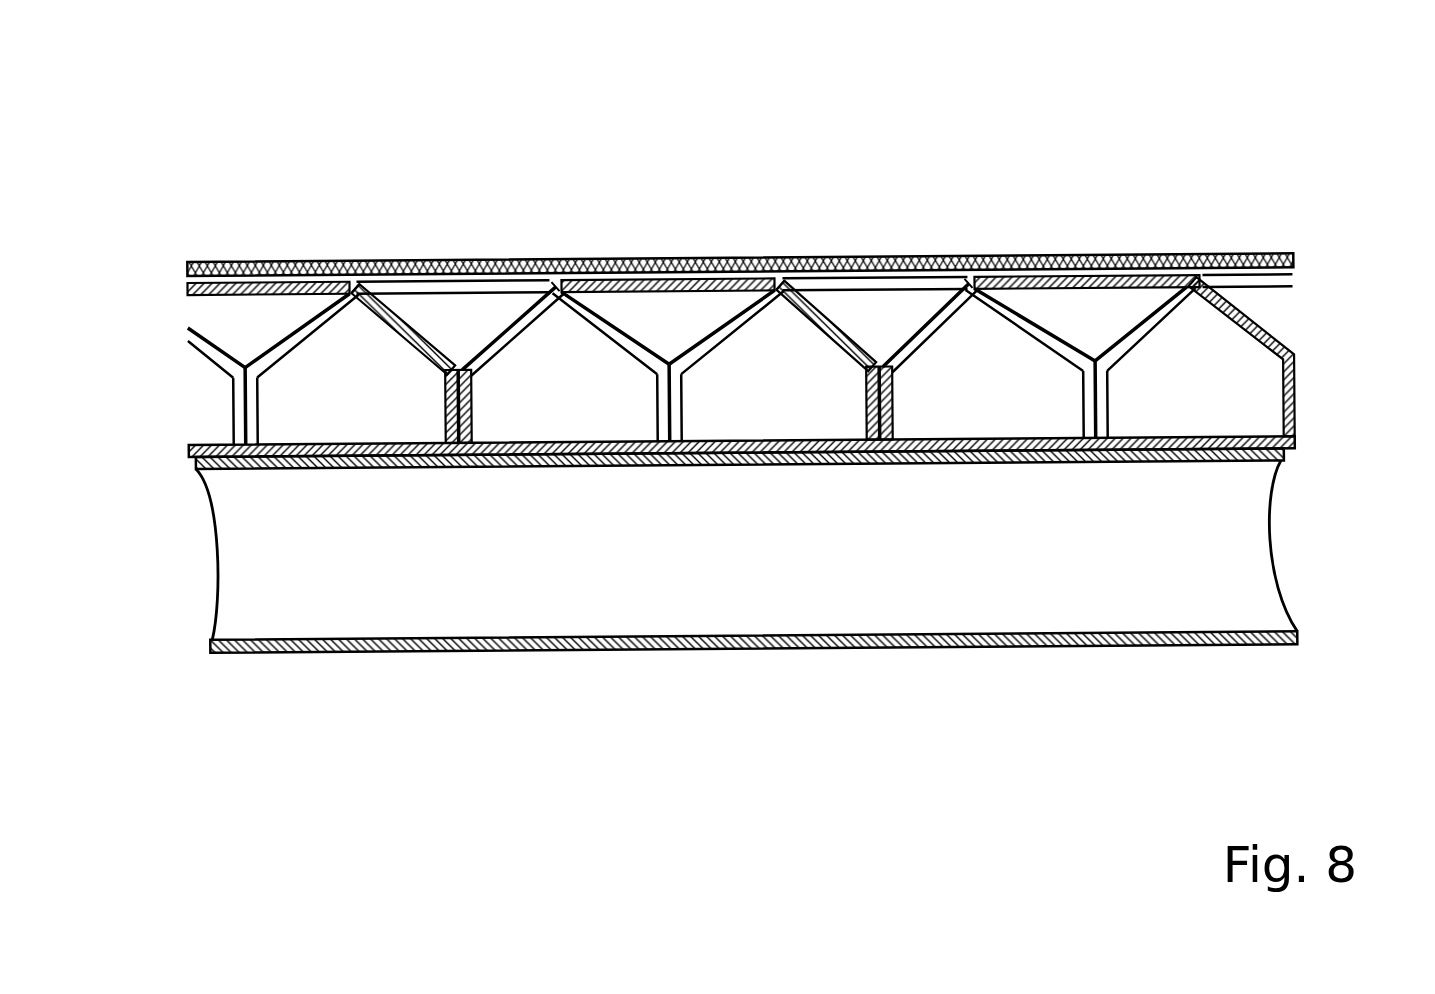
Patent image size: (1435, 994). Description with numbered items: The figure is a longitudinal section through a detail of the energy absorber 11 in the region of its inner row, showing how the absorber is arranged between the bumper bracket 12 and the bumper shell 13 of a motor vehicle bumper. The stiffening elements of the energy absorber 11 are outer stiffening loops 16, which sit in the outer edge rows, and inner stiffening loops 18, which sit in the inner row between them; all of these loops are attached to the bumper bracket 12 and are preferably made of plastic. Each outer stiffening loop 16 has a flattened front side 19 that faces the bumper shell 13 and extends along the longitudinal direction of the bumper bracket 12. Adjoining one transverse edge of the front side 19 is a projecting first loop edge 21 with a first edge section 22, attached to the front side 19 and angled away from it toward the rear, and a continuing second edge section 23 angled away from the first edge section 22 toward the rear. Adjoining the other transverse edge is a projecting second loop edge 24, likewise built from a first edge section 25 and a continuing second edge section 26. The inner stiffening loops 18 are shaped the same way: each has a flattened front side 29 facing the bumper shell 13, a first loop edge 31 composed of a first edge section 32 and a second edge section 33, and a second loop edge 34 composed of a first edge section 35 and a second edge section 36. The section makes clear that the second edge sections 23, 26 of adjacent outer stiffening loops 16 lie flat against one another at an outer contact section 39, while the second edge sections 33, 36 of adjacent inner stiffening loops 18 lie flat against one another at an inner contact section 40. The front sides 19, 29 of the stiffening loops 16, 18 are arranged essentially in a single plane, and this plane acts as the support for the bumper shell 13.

The energy absorber 11 is at (1337, 354).
The bumper bracket 12 is at (712, 652).
The bumper shell 13 is at (1253, 262).
The outer stiffening loop 16 is at (298, 392).
The inner stiffening loop 18 is at (387, 374).
The front side 19 is at (483, 321).
The first loop edge 21 is at (633, 280).
The first edge section 22 is at (215, 343).
The second edge section 23 is at (226, 400).
The second loop edge 24 is at (276, 326).
The first edge section 25 is at (298, 297).
The second edge section 26 is at (282, 380).
The front side 29 is at (246, 338).
The first loop edge 31 is at (421, 312).
The first edge section 32 is at (380, 318).
The second edge section 33 is at (445, 417).
The second loop edge 34 is at (463, 332).
The first edge section 35 is at (517, 323).
The second edge section 36 is at (471, 418).
The outer contact section 39 is at (200, 275).
The inner contact section 40 is at (458, 353).